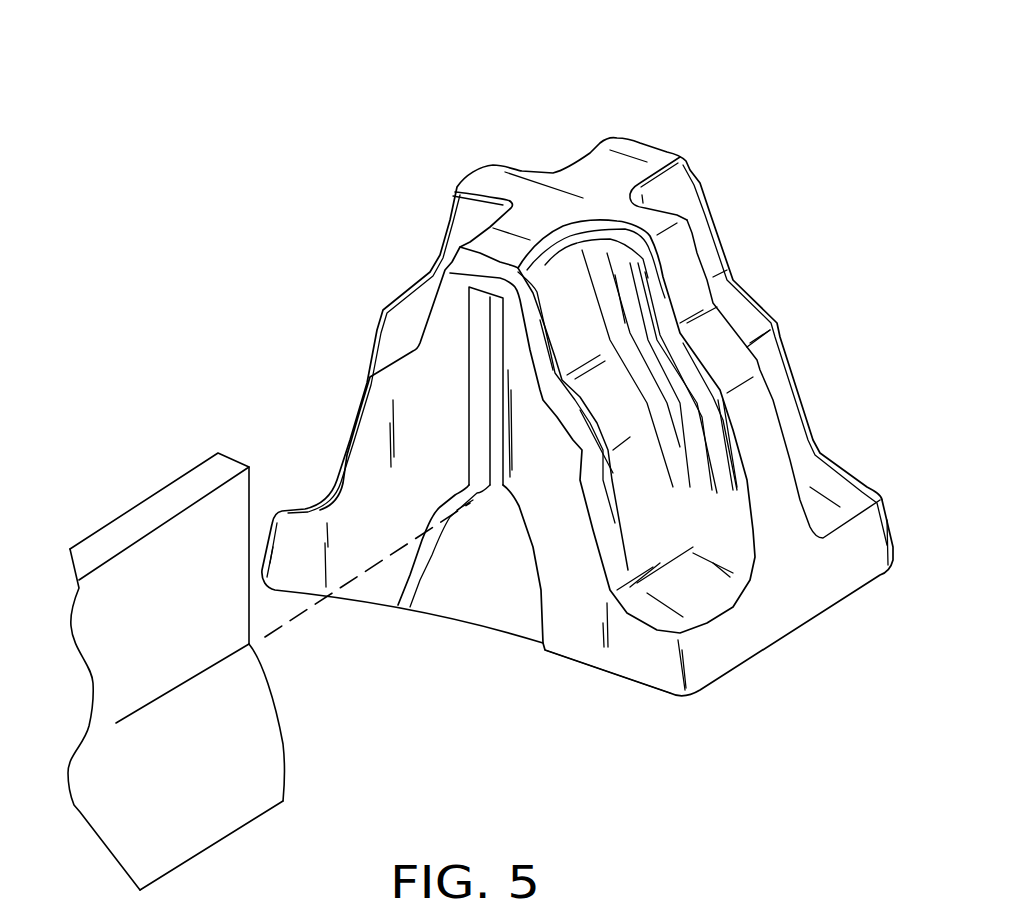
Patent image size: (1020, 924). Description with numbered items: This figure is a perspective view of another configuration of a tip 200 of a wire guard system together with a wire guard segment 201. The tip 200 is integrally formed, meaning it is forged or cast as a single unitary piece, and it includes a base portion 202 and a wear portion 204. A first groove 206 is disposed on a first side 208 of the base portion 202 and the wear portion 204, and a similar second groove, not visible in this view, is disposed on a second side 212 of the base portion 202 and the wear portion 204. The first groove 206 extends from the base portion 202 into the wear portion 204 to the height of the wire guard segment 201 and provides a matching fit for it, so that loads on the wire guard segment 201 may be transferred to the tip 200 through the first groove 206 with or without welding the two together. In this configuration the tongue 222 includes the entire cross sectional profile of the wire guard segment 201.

The tip 200 is at (577, 386).
The wire guard segment 201 is at (226, 595).
The base portion 202 is at (728, 647).
The wear portion 204 is at (417, 277).
The first groove 206 is at (468, 385).
The first side 208 is at (570, 620).
The second side 212 is at (698, 177).
The tongue 222 is at (274, 687).